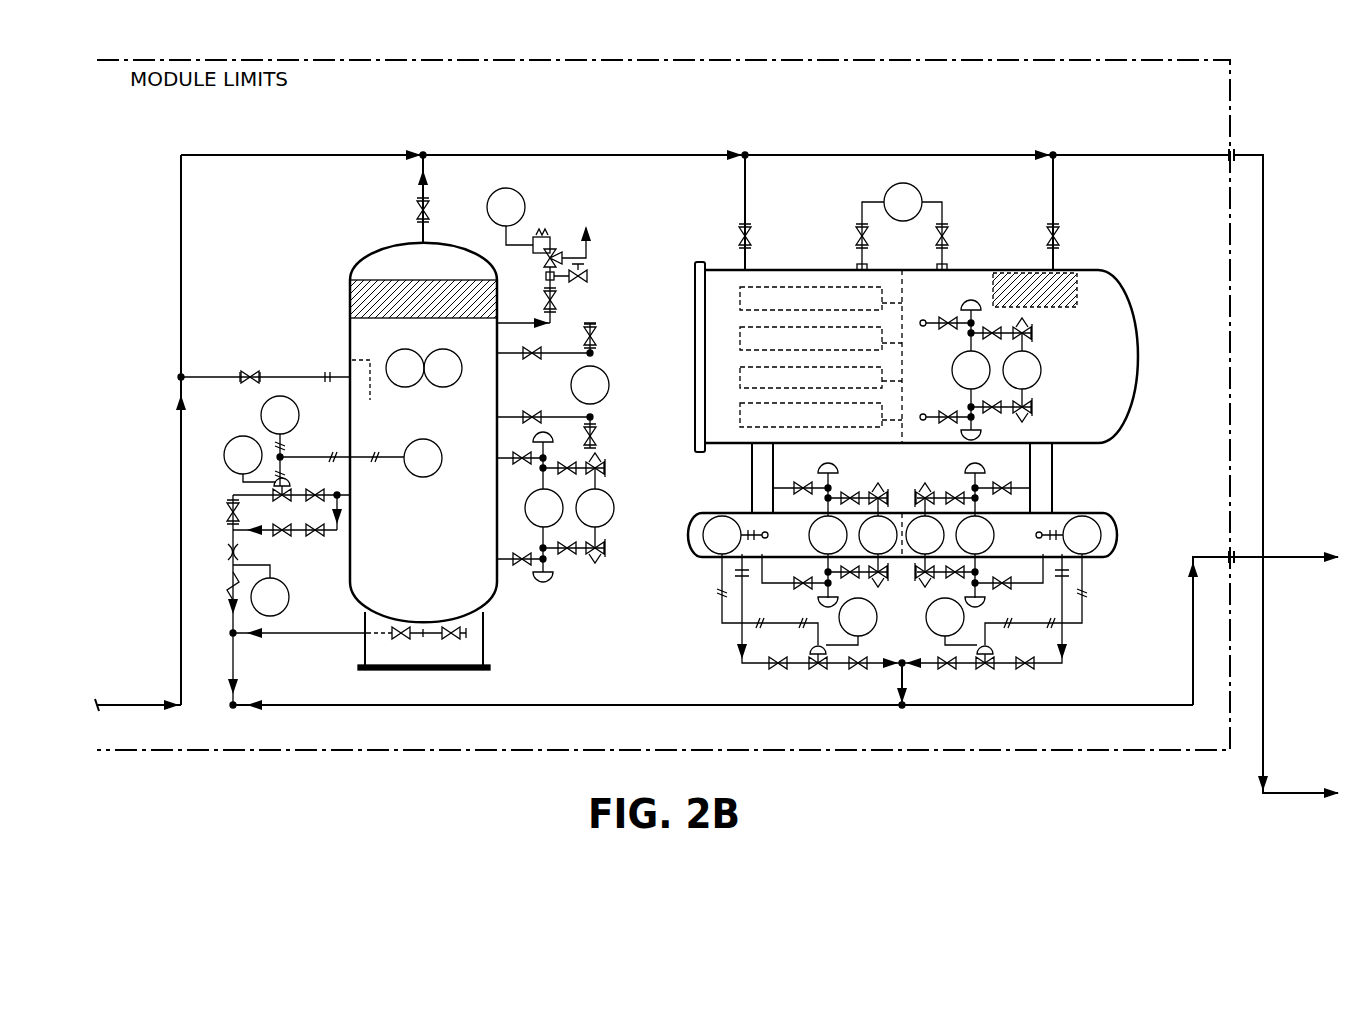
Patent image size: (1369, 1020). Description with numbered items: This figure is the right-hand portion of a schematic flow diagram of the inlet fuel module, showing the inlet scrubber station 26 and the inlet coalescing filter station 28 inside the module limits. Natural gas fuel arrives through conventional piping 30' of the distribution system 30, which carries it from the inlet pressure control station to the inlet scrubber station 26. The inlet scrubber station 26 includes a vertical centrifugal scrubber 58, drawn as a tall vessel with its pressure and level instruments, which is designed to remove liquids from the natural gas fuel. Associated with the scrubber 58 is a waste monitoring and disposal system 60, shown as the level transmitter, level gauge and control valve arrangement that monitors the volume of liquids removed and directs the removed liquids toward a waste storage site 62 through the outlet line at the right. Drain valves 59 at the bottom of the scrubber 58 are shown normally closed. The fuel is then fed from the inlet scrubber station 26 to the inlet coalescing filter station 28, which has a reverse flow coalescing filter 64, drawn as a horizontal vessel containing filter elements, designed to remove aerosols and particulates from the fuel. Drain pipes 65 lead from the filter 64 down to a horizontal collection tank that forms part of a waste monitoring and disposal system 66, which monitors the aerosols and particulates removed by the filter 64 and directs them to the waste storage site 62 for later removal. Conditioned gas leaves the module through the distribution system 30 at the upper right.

The inlet scrubber station 26 is at (182, 125).
The inlet coalescing filter station 28 is at (695, 125).
The vertical centrifugal scrubber 58 is at (388, 250).
The scrubber drain valves 59 is at (405, 628).
The waste monitoring and disposal system 60 is at (626, 318).
The waste storage site 62 is at (1302, 557).
The reverse flow coalescing filter 64 is at (1093, 270).
The filter drain pipes 65 is at (792, 485).
The waste monitoring and disposal system 66 is at (1128, 485).
The distribution system 30 is at (1300, 476).
The piping 30' is at (121, 684).